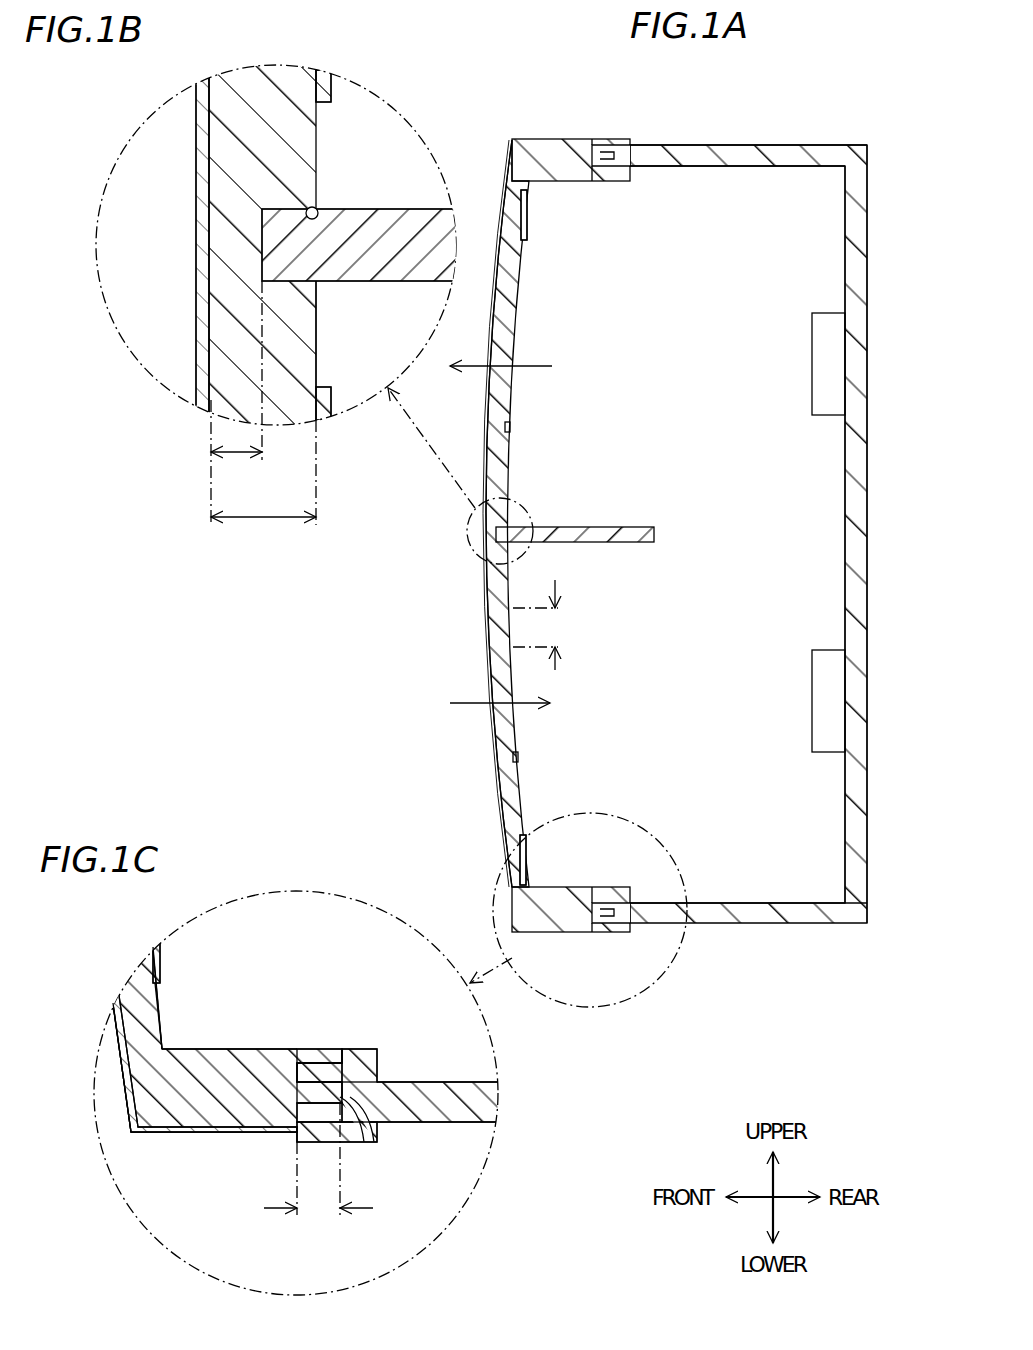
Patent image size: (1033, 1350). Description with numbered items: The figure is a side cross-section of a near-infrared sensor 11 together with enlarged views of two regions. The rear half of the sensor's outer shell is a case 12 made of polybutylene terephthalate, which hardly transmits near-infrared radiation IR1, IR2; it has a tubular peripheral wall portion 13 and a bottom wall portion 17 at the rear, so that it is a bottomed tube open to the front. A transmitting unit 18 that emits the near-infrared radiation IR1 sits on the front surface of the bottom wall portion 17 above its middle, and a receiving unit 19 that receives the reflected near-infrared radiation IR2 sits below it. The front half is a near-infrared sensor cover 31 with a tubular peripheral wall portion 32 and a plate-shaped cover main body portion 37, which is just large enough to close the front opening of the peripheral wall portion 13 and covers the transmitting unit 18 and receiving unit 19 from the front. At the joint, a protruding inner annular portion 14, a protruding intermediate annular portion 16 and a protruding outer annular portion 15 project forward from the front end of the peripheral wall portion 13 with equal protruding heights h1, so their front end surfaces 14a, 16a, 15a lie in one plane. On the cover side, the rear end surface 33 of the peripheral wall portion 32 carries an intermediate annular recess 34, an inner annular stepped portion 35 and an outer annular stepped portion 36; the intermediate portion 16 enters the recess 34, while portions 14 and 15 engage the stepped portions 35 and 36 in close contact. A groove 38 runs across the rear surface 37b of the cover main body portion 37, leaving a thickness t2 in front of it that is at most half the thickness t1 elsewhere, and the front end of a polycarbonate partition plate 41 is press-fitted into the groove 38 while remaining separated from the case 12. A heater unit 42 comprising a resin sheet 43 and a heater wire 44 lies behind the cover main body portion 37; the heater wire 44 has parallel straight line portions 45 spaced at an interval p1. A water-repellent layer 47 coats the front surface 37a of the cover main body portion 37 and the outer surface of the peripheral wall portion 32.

In FIG. 1A, the near-infrared sensor 11 is at (757, 942).
In FIG. 1A, the case 12 is at (895, 90).
In FIG. 1C, the case 12 is at (443, 1102).
In FIG. 1A, the peripheral wall portion 13 is at (815, 150).
In FIG. 1C, the peripheral wall portion 13 is at (492, 1098).
In FIG. 1C, the protruding inner annular portion 14 is at (332, 1049).
In FIG. 1C, the front end surface 14a is at (292, 1049).
In FIG. 1C, the protruding outer annular portion 15 is at (320, 1144).
In FIG. 1C, the front end surface 15a is at (296, 1140).
In FIG. 1C, the protruding intermediate annular portion 16 is at (338, 1092).
In FIG. 1C, the front end surface 16a is at (296, 1075).
In FIG. 1A, the bottom wall portion 17 is at (868, 162).
In FIG. 1A, the transmitting unit 18 is at (812, 367).
In FIG. 1A, the receiving unit 19 is at (812, 702).
In FIG. 1A, the near-infrared sensor cover 31 is at (478, 801).
In FIG. 1B, the near-infrared sensor cover 31 is at (182, 257).
In FIG. 1C, the near-infrared sensor cover 31 is at (118, 1136).
In FIG. 1A, the peripheral wall portion 32 is at (540, 140).
In FIG. 1C, the peripheral wall portion 32 is at (220, 1118).
In FIG. 1C, the rear end surface 33 is at (347, 1080).
In FIG. 1C, the intermediate annular recess 34 is at (358, 1123).
In FIG. 1C, the inner annular stepped portion 35 is at (308, 1047).
In FIG. 1C, the outer annular stepped portion 36 is at (336, 1159).
In FIG. 1A, the cover main body portion 37 is at (510, 188).
In FIG. 1B, the cover main body portion 37 is at (305, 148).
In FIG. 1C, the cover main body portion 37 is at (133, 978).
In FIG. 1B, the front surface 37a is at (201, 197).
In FIG. 1C, the front surface 37a is at (118, 1108).
In FIG. 1B, the rear surface 37b is at (318, 330).
In FIG. 1C, the rear surface 37b is at (163, 1000).
In FIG. 1B, the groove 38 is at (320, 212).
In FIG. 1A, the partition plate 41 is at (629, 527).
In FIG. 1B, the partition plate 41 is at (392, 214).
In FIG. 1A, the heater unit 42 is at (523, 537).
In FIG. 1B, the heater unit 42 is at (323, 245).
In FIG. 1C, the heater unit 42 is at (156, 961).
In FIG. 1A, the resin sheet 43 is at (528, 215).
In FIG. 1B, the resin sheet 43 is at (331, 92).
In FIG. 1C, the resin sheet 43 is at (161, 970).
In FIG. 1A, the heater wire 44 is at (519, 759).
In FIG. 1A, the straight line portions 45 is at (510, 428).
In FIG. 1A, the water-repellent layer 47 is at (486, 630).
In FIG. 1B, the water-repellent layer 47 is at (205, 400).
In FIG. 1C, the water-repellent layer 47 is at (165, 1134).
In FIG. 1A, the interval p1 is at (557, 627).
In FIG. 1B, the thickness t1 is at (262, 520).
In FIG. 1B, the thickness t2 is at (240, 455).
In FIG. 1C, the protruding height h1 is at (320, 1212).
In FIG. 1A, the near-infrared radiation IR1 is at (527, 348).
In FIG. 1A, the near-infrared radiation IR2 is at (522, 701).